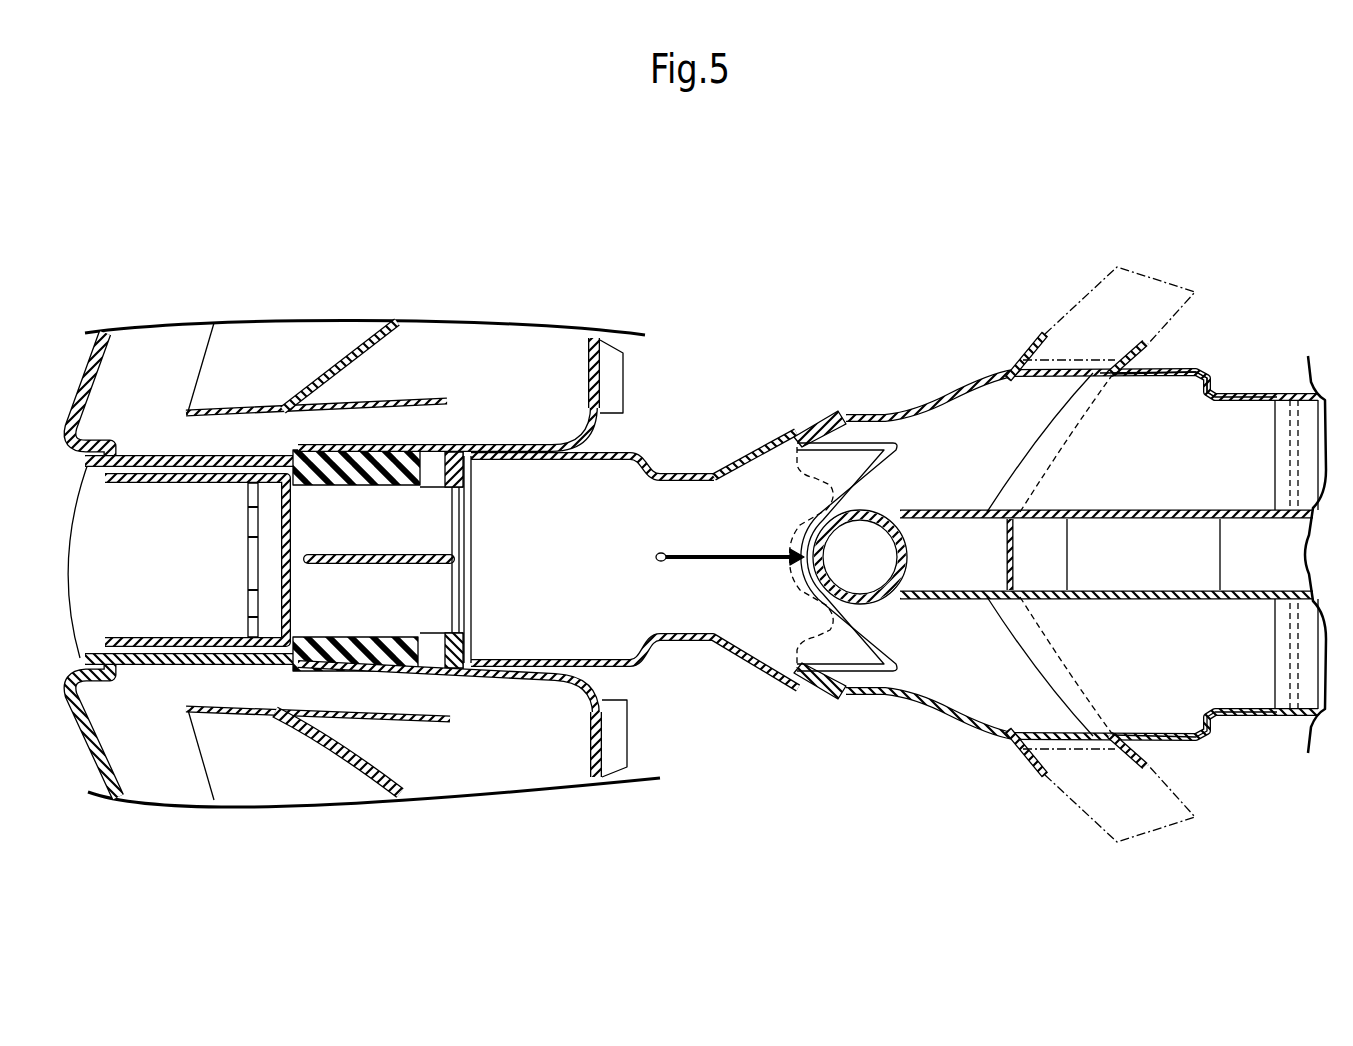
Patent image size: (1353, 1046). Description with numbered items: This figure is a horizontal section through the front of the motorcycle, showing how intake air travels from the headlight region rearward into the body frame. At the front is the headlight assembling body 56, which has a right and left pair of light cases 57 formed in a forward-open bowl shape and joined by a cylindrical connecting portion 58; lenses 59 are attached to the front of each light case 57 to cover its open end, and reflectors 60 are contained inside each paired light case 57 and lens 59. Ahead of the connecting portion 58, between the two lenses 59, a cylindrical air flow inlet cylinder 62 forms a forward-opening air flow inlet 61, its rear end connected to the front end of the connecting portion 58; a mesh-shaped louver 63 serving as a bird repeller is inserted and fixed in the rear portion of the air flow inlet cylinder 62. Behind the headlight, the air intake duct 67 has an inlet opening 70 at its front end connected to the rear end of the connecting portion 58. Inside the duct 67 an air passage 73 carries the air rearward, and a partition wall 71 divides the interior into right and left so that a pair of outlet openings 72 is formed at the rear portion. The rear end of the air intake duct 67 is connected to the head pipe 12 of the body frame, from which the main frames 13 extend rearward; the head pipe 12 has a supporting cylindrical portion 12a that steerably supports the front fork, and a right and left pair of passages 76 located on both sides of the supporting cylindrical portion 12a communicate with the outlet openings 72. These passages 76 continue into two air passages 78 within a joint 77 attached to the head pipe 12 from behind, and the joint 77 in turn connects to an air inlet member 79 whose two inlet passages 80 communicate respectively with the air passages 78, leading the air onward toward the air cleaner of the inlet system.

The head pipe 12 is at (900, 414).
The supporting cylindrical portion 12a is at (883, 512).
The main frame 13 is at (1062, 316).
The headlight assembling body 56 is at (600, 684).
The light case 57 is at (593, 377).
The cylindrical connecting portion 58 is at (385, 447).
The lens 59 is at (85, 397).
The reflector 60 is at (223, 407).
The air flow inlet 61 is at (140, 575).
The air flow inlet cylinder 62 is at (190, 647).
The louver 63 is at (250, 568).
The air intake duct 67 is at (703, 474).
The inlet opening 70 is at (460, 517).
The partition wall 71 is at (681, 553).
The outlet opening 72 is at (746, 530).
The air passage 73 is at (549, 590).
The passage 76 is at (996, 453).
The joint 77 is at (1173, 367).
The air passage 78 is at (1178, 457).
The air inlet member 79 is at (1307, 713).
The inlet passage 80 is at (1310, 463).